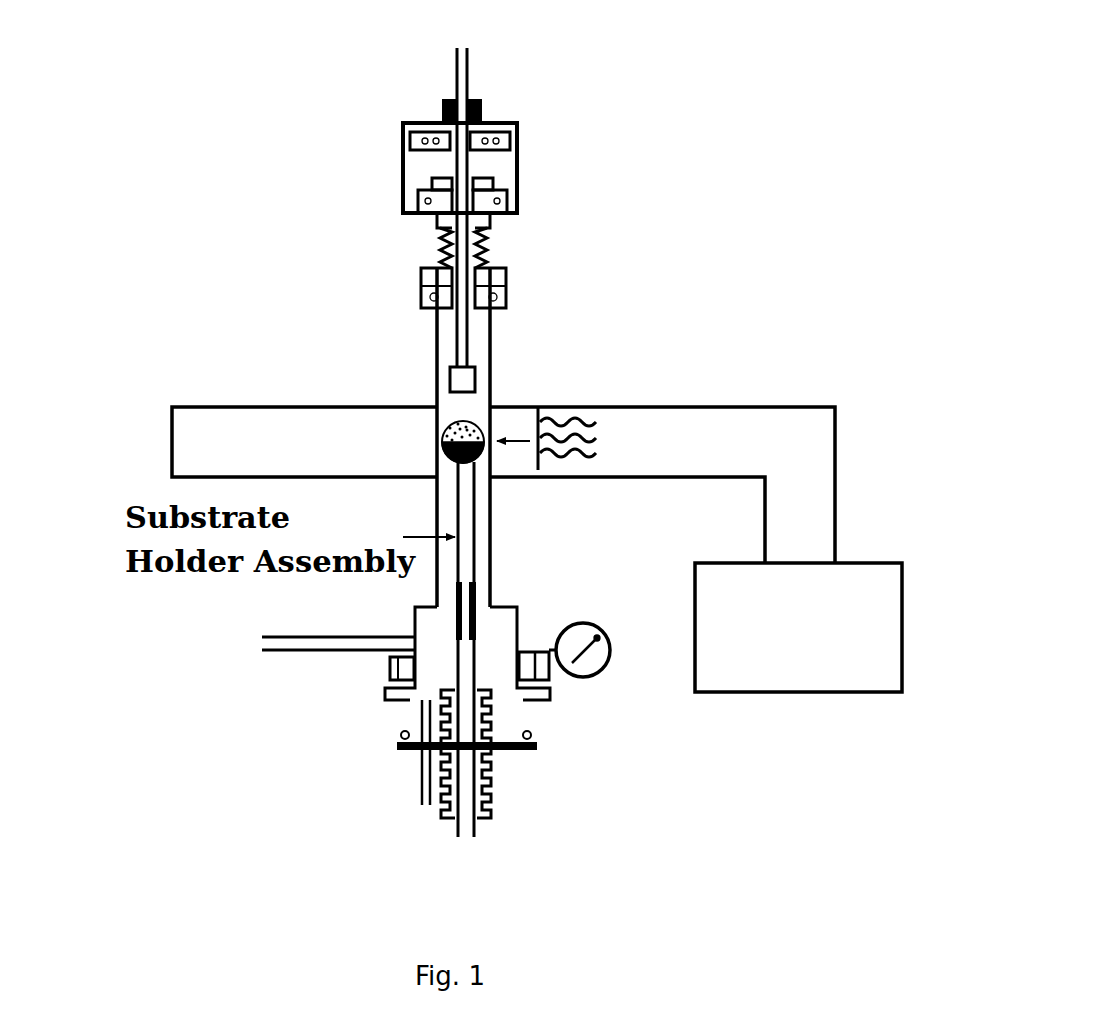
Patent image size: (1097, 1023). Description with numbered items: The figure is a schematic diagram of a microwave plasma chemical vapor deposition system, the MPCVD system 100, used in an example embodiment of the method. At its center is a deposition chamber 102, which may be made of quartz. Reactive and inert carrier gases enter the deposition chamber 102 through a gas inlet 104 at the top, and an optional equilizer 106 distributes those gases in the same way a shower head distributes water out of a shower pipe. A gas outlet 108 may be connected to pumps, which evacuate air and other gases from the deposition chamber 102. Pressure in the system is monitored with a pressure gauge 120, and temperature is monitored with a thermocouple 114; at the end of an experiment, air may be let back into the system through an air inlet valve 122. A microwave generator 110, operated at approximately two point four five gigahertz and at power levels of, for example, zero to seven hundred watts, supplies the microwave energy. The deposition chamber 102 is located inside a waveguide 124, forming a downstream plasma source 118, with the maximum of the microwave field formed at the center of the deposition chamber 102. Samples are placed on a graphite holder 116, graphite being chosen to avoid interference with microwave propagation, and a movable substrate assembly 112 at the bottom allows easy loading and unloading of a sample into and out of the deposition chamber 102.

The MPCVD system 100 is at (305, 79).
The deposition chamber 102 is at (435, 338).
The gas inlet 104 is at (468, 68).
The equilizer 106 is at (643, 318).
The gas outlet 108 is at (259, 677).
The microwave generator 110 is at (883, 613).
The movable substrate assembly 112 is at (663, 668).
The thermocouple 114 is at (415, 791).
The graphite holder 116 is at (497, 437).
The downstream plasma source 118 is at (597, 424).
The pressure gauge 120 is at (607, 591).
The air inlet valve 122 is at (553, 679).
The waveguide 124 is at (295, 420).